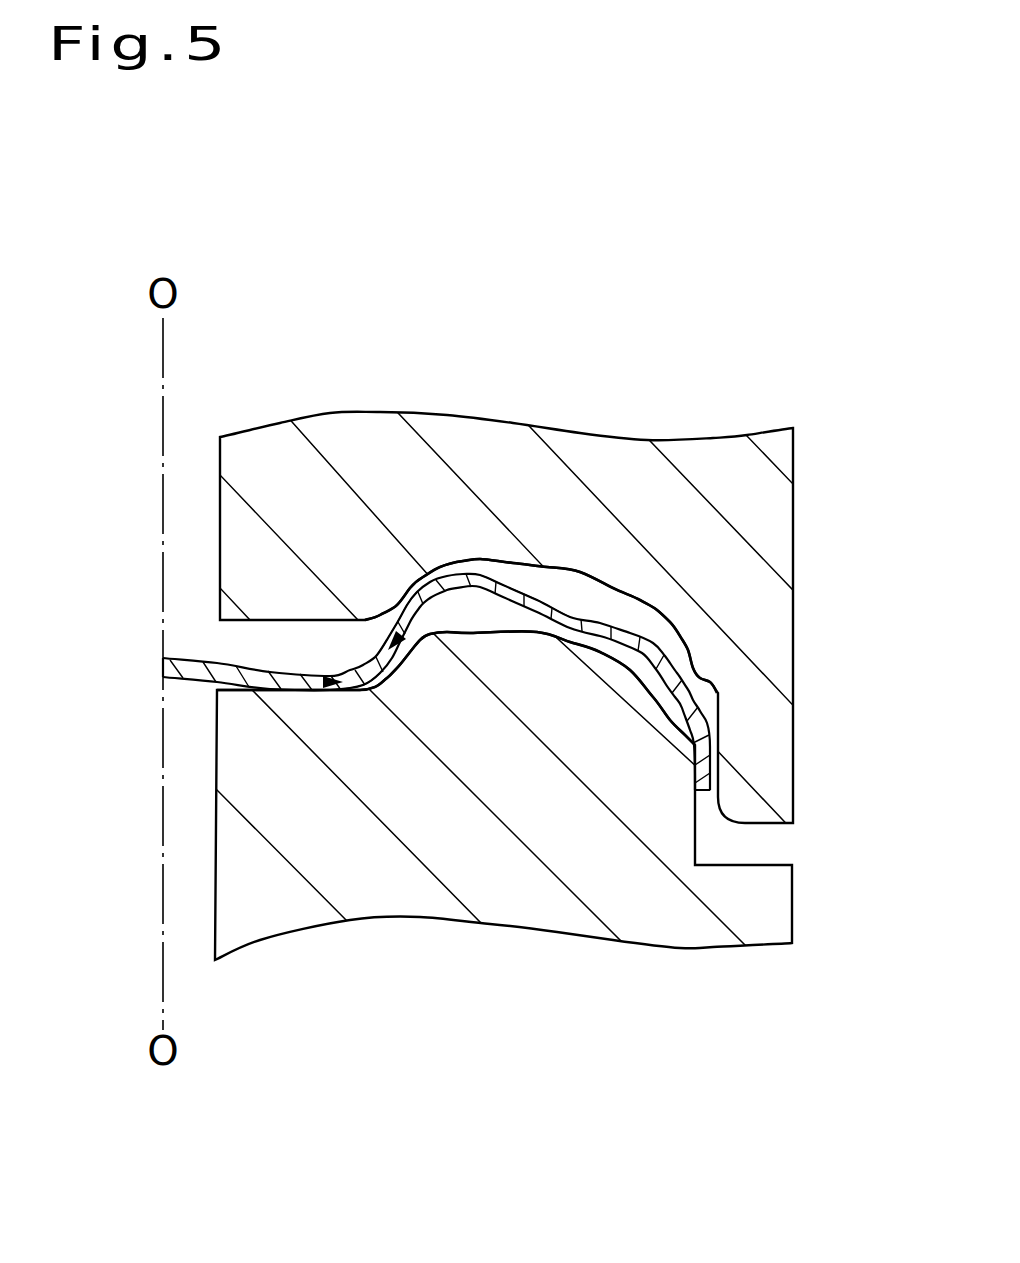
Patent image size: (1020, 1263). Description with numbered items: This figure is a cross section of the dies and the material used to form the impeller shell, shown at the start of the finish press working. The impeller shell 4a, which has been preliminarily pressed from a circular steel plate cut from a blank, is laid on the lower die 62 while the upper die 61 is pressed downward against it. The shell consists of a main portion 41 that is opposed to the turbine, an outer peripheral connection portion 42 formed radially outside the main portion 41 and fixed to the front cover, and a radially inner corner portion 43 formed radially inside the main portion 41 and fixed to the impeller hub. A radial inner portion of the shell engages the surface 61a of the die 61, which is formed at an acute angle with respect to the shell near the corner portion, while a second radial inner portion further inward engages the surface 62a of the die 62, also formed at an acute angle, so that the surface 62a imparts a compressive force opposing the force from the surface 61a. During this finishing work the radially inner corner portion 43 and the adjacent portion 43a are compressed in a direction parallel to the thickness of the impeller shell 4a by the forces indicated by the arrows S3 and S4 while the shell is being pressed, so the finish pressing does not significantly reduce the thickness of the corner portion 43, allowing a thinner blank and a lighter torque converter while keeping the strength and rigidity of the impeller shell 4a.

The die 61 is at (760, 500).
The die 62 is at (773, 903).
The surface of die 61 61a is at (452, 558).
The surface of die 62 62a is at (480, 635).
The impeller shell 4a is at (585, 593).
The main portion 41 is at (523, 563).
The outer peripheral connection portion 42 is at (702, 747).
The radially inner corner portion 43 is at (367, 687).
The portion 43a is at (418, 604).
The arrow S3 is at (322, 683).
The arrow S4 is at (393, 637).